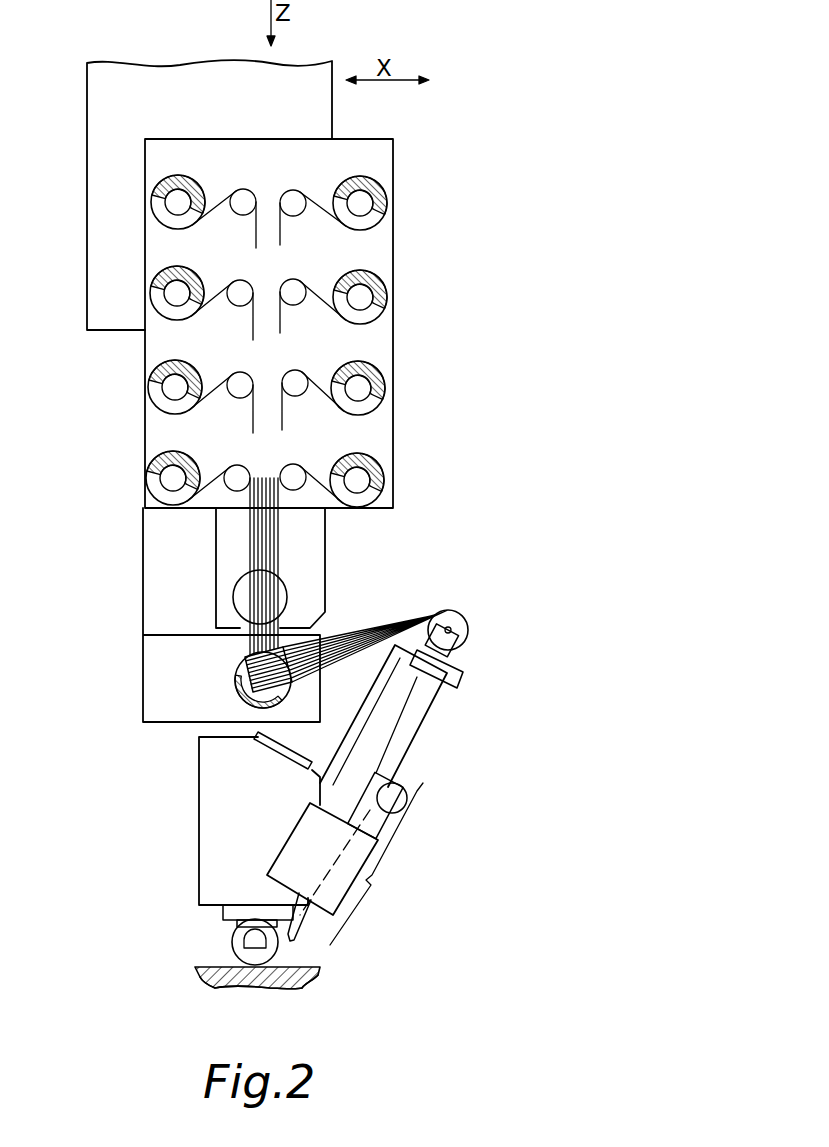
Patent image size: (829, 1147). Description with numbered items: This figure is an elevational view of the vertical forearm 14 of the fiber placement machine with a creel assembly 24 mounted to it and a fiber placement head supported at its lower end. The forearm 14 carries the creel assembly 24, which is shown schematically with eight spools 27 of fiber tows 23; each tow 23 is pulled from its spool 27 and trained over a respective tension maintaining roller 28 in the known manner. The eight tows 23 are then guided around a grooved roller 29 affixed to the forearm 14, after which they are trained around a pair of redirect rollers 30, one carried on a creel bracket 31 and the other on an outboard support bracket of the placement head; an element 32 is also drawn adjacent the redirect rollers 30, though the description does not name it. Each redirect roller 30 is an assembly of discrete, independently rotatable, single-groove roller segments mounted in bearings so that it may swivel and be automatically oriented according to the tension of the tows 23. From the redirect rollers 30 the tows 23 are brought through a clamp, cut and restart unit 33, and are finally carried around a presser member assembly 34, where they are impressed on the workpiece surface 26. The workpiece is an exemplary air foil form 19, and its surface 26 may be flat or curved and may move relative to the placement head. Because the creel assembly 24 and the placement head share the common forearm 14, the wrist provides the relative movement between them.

The forearm 14 is at (128, 117).
The air foil form 19 is at (303, 988).
The fiber tows 23 is at (254, 232).
The creel assembly 24 is at (400, 244).
The workpiece surface 26 is at (200, 967).
The spools 27 is at (370, 184).
The tension maintaining roller 28 is at (293, 306).
The grooved roller 29 is at (281, 600).
The redirect rollers 30 is at (468, 618).
The creel bracket 31 is at (143, 567).
The pneumatic cylinder 32 is at (461, 685).
The clamp, cut and restart unit 33 is at (345, 864).
The presser member assembly 34 is at (226, 935).